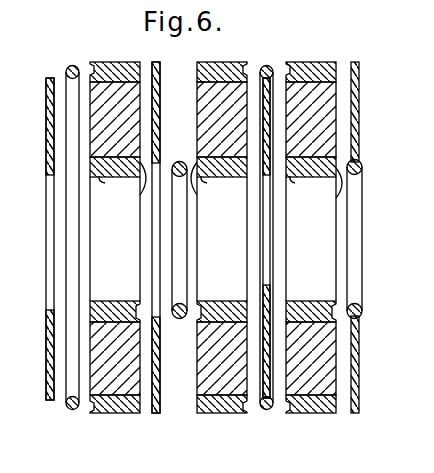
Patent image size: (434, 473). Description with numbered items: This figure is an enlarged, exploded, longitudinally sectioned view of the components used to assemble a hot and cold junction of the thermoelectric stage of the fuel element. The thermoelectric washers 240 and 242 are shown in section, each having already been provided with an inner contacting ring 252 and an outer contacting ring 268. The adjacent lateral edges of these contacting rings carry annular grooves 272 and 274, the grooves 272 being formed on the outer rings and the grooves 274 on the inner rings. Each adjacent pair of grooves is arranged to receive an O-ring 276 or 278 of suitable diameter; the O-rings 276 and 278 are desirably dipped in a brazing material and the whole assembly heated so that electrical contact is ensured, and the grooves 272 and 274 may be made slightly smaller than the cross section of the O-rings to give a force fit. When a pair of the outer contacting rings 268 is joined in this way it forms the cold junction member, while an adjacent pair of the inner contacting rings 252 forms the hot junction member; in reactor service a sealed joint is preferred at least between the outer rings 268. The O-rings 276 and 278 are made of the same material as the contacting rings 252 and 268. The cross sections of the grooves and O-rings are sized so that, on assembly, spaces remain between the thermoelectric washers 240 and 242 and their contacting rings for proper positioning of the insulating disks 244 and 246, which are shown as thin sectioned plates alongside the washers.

The thermoelectric washer 240 is at (107, 328).
The thermoelectric washer 242 is at (222, 330).
The insulating disk 244 is at (47, 112).
The insulating disk 246 is at (158, 106).
The inner contacting ring 252 is at (214, 188).
The outer contacting ring 268 is at (102, 413).
The annular groove 272 is at (140, 198).
The annular groove 274 is at (287, 72).
The O-ring 276 is at (178, 161).
The O-ring 278 is at (67, 68).